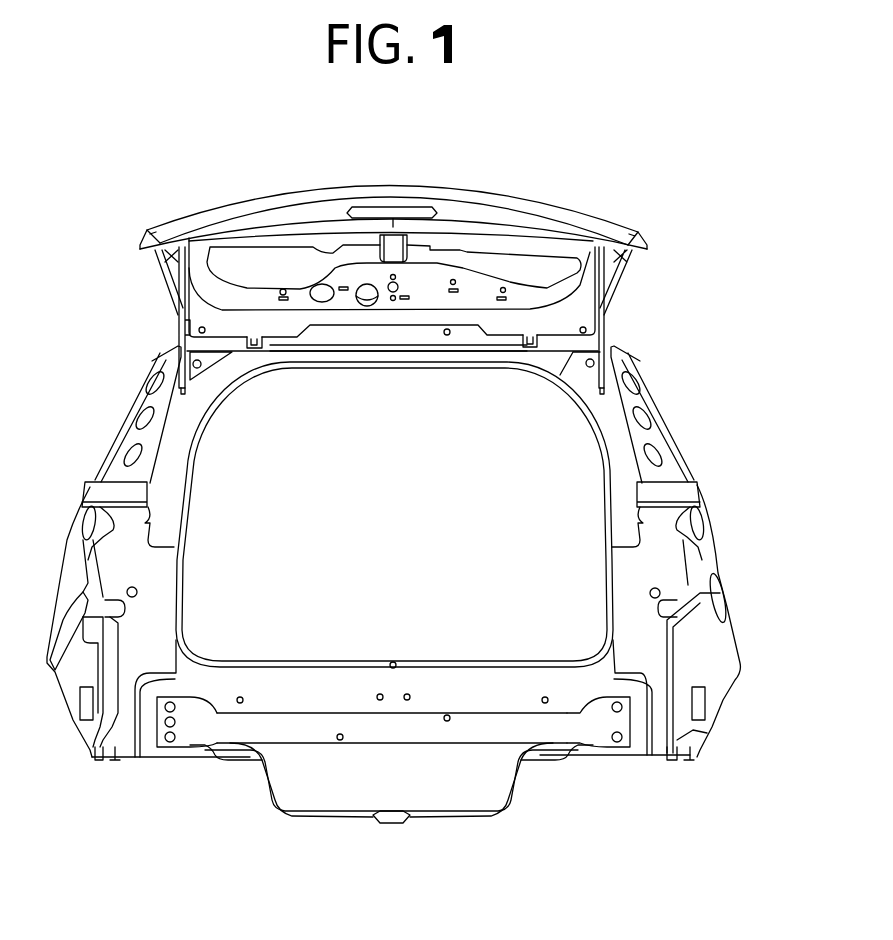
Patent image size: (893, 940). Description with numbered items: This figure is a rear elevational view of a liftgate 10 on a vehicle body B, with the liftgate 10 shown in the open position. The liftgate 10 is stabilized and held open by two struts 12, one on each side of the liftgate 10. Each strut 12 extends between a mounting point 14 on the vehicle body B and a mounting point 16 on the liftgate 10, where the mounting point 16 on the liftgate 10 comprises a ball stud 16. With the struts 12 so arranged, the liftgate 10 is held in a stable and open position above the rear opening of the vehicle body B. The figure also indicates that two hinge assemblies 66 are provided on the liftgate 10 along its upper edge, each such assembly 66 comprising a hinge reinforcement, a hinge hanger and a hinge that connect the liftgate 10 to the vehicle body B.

The liftgate 10 is at (593, 172).
The strut 12 is at (176, 324).
The mounting point 14 is at (183, 393).
The mounting point / ball stud 16 is at (155, 252).
The hinge assembly 66 is at (480, 382).
The vehicle body B is at (690, 490).